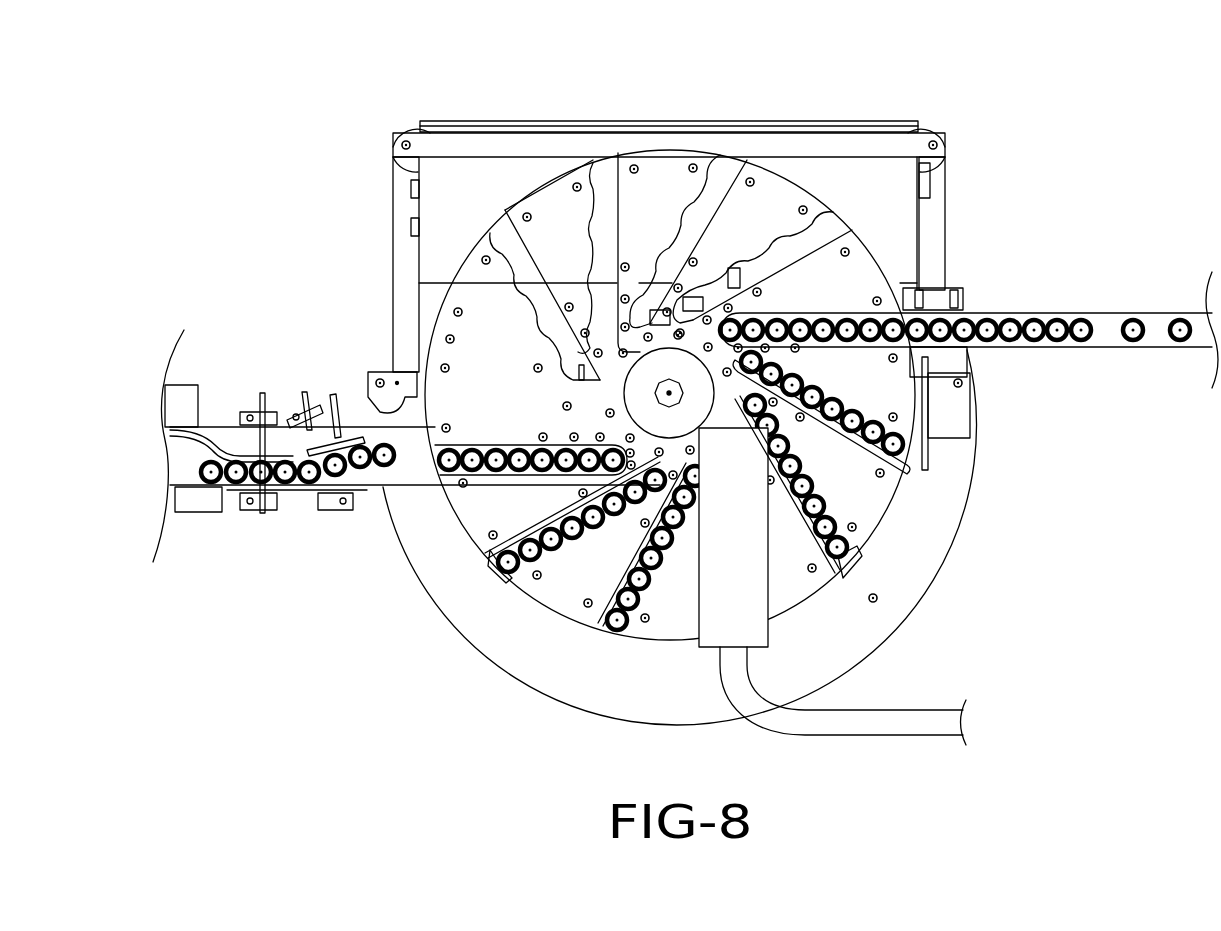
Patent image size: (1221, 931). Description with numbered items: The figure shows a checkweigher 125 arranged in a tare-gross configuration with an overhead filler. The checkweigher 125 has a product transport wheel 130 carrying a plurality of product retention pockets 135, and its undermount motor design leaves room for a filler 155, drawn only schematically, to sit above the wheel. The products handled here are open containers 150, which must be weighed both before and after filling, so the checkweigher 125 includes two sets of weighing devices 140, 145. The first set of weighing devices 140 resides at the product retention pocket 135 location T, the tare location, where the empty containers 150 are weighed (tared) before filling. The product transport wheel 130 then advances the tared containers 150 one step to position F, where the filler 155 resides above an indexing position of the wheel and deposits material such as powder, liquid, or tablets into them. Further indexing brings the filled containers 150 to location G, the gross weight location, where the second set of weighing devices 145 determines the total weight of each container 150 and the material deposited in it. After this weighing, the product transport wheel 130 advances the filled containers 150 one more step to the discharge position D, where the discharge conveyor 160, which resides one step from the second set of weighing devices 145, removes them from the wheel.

The checkweigher 125 is at (236, 176).
The product transport wheel 130 is at (560, 613).
The product retention pockets 135 is at (492, 237).
The first set of weighing devices 140 is at (870, 563).
The second set of weighing devices 145 is at (500, 583).
The containers 150 is at (1098, 315).
The filler 155 is at (755, 519).
The discharge conveyor 160 is at (185, 452).
The discharge position D is at (423, 460).
The gross weight location G is at (508, 565).
The tare location T is at (833, 560).
The filler position F is at (735, 648).